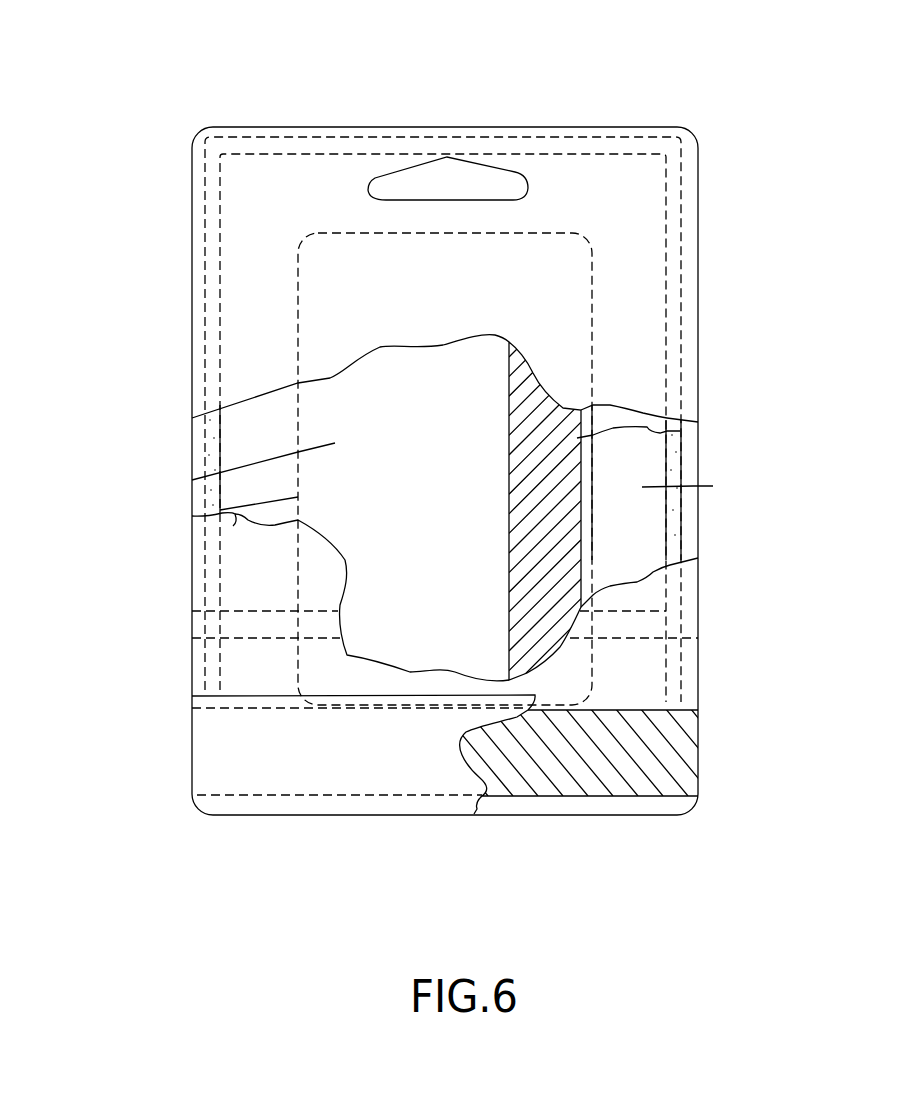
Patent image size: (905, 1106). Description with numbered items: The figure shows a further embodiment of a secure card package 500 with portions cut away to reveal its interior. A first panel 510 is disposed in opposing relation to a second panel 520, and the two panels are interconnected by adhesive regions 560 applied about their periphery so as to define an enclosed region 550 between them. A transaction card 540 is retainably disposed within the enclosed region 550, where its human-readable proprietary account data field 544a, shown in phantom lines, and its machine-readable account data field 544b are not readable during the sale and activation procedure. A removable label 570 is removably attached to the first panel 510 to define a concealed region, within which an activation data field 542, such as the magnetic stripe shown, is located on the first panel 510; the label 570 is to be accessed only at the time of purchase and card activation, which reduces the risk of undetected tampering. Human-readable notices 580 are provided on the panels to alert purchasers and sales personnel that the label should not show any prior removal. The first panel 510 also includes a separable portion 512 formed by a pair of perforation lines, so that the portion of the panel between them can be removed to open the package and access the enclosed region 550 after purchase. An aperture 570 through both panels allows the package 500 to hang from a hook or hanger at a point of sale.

The secure card package 500 is at (612, 113).
The first panel 510 is at (233, 322).
The separable portion 512 is at (240, 612).
The second panel 520 is at (192, 430).
The transaction card 540 is at (233, 526).
The activation data field 542 is at (683, 775).
The human-readable proprietary account data field 544a is at (192, 480).
The machine-readable account data field 544b is at (680, 431).
The enclosed region 550 is at (713, 486).
The adhesive regions 560 is at (207, 213).
The removable label 570 is at (443, 178).
The human-readable notices 580 is at (233, 255).